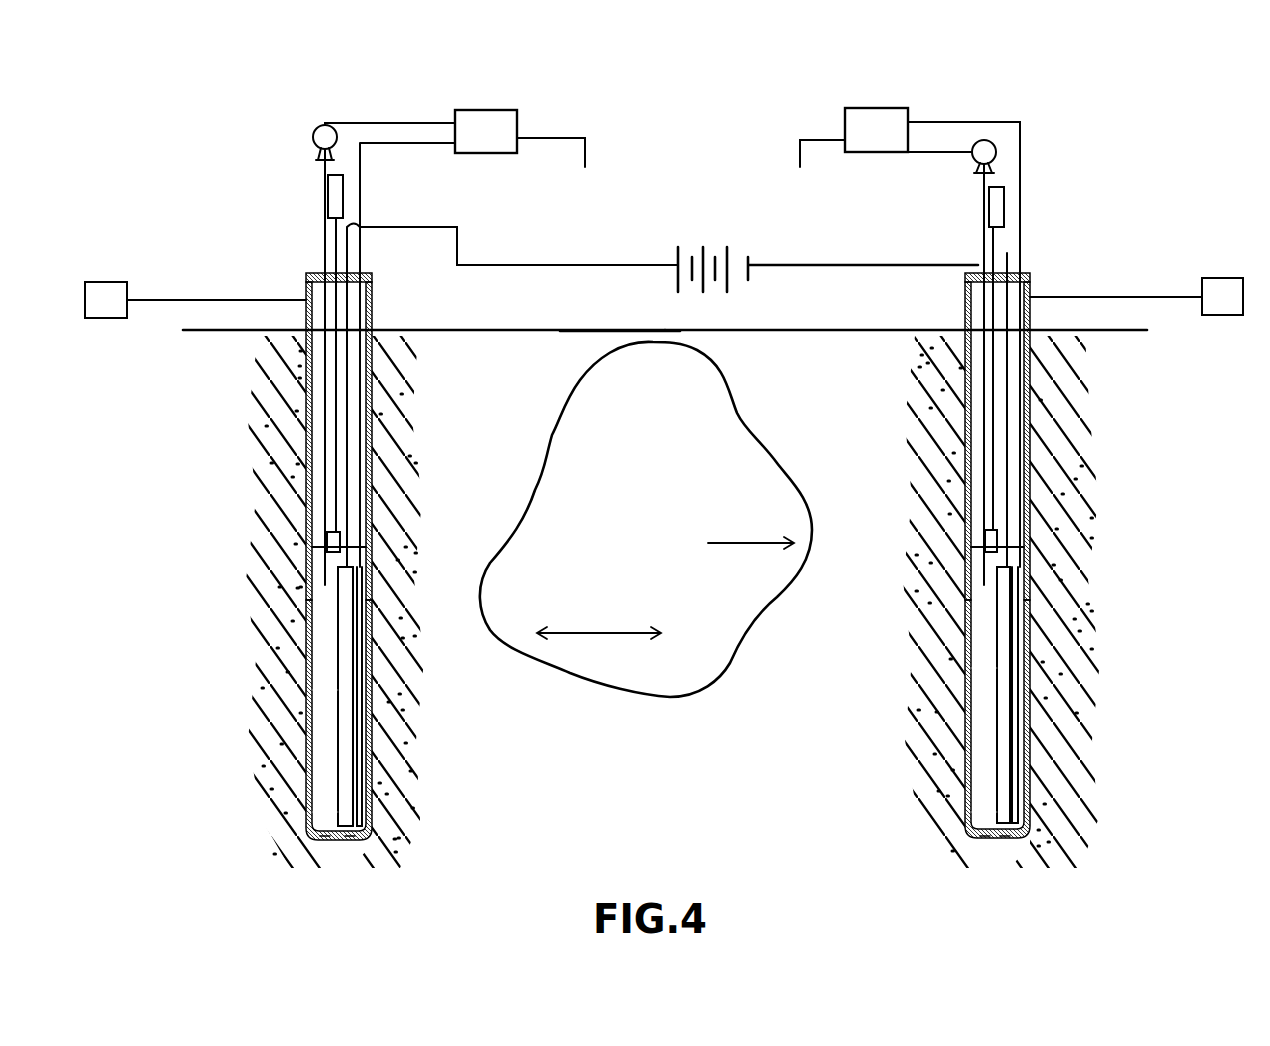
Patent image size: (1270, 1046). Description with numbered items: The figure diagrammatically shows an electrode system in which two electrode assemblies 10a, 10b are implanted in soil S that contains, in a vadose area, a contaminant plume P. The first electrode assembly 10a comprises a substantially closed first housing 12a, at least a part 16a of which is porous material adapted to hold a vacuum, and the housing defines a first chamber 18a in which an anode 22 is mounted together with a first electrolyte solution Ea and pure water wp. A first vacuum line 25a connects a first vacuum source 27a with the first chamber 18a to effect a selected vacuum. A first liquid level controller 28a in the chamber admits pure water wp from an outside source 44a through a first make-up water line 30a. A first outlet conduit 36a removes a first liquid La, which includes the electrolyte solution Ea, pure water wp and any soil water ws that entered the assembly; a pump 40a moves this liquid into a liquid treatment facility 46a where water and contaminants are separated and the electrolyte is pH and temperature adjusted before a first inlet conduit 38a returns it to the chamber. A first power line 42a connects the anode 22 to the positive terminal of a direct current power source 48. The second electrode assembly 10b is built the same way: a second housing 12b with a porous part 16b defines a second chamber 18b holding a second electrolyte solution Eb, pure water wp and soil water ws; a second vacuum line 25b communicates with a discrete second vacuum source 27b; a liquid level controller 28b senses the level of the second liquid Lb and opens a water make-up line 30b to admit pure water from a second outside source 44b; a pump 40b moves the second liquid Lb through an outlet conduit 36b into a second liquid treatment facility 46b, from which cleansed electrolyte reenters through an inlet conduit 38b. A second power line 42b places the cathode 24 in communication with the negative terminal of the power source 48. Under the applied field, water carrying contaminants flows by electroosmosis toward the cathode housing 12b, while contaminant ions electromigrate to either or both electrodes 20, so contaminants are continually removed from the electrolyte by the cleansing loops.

The first electrode assembly 10a is at (267, 436).
The second electrode assembly 10b is at (1069, 409).
The first housing 12a is at (373, 363).
The second housing 12b is at (965, 382).
The porous part 16a is at (306, 730).
The porous part 16b is at (1030, 662).
The first chamber 18a is at (373, 423).
The second chamber 18b is at (965, 445).
The electrodes 20 is at (347, 732).
The anode 22 is at (344, 640).
The cathode 24 is at (1000, 740).
The first vacuum line 25a is at (249, 302).
The second vacuum line 25b is at (1072, 303).
The first vacuum source 27a is at (195, 300).
The second vacuum source 27b is at (1136, 296).
The first liquid level controller 28a is at (327, 536).
The liquid level controller 28b is at (985, 534).
The first make-up water line 30a is at (334, 240).
The water make-up line 30b is at (992, 228).
The first outlet conduit 36a is at (323, 265).
The outlet conduit 36b is at (984, 252).
The first inlet conduit 38a is at (362, 262).
The inlet conduit 38b is at (1021, 168).
The pump 40a is at (314, 132).
The pump 40b is at (994, 144).
The first power line 42a is at (351, 245).
The second power line 42b is at (1012, 262).
The outside source 44a is at (328, 190).
The second outside source 44b is at (989, 198).
The liquid treatment facility 46a is at (512, 123).
The second liquid treatment facility 46b is at (845, 120).
The direct current power source 48 is at (814, 282).
The soil S is at (570, 330).
The contaminant plume P is at (683, 694).
The first liquid La is at (325, 690).
The second liquid Lb is at (985, 666).
The first electrolyte solution Ea is at (325, 812).
The second electrolyte solution Eb is at (980, 812).
The pure water wp is at (326, 846).
The soil water ws is at (338, 845).